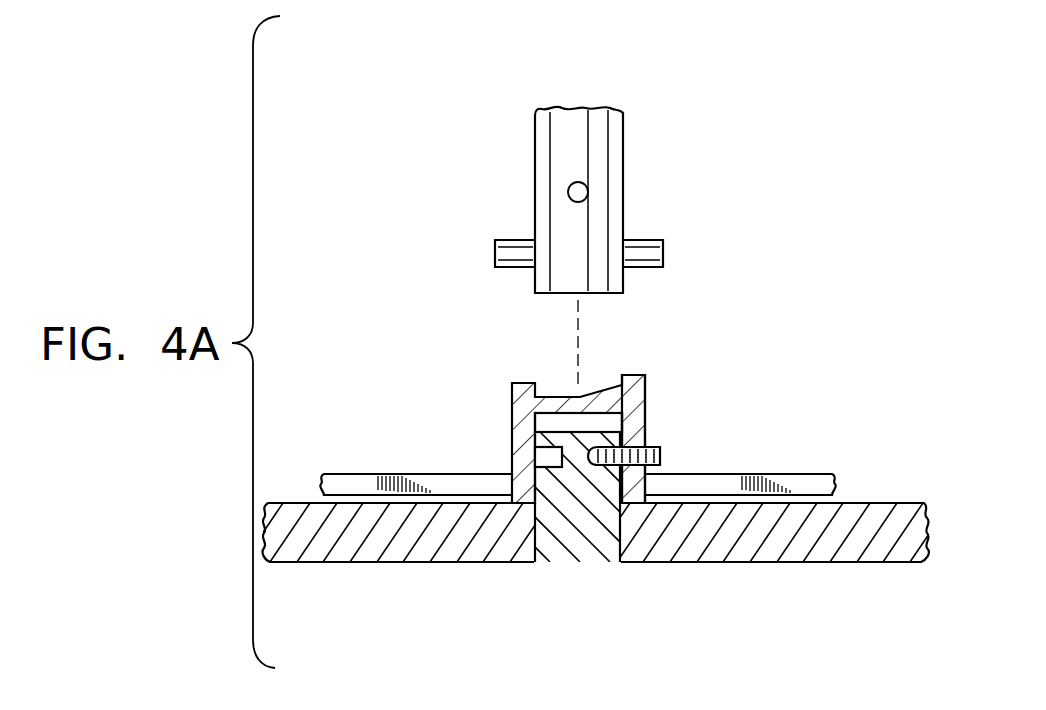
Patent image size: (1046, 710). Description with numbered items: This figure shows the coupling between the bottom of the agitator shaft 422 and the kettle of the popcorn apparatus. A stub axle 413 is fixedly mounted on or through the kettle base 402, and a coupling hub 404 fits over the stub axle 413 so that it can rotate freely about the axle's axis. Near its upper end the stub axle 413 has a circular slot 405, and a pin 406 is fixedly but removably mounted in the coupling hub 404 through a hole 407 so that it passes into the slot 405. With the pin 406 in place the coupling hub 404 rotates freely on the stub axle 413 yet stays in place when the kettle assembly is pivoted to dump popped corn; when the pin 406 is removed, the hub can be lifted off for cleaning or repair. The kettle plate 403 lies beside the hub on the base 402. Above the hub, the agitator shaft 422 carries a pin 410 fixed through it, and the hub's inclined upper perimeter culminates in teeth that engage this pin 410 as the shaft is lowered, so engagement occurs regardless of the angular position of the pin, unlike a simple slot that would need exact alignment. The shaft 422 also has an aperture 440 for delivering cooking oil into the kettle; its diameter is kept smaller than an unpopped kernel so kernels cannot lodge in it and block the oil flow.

The base plate 402 is at (367, 562).
The sheet / plate 403 is at (340, 478).
The coupling hub 404 is at (510, 408).
The circular slot 405 is at (545, 452).
The pin 406 is at (662, 457).
The hole 407 is at (647, 446).
The pin 410 is at (663, 248).
The stub axle 413 is at (568, 562).
The agitator shaft 422 is at (623, 150).
The aperture 440 is at (590, 190).